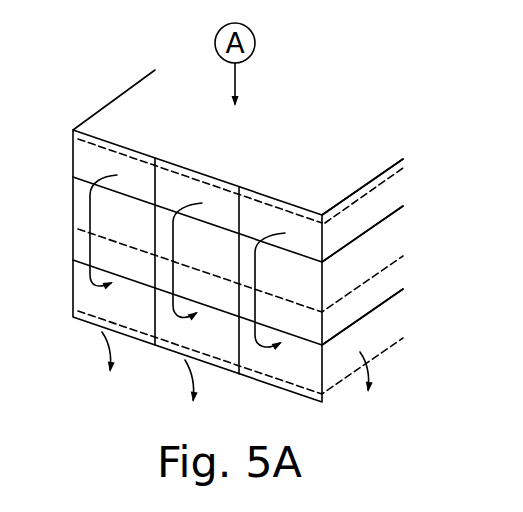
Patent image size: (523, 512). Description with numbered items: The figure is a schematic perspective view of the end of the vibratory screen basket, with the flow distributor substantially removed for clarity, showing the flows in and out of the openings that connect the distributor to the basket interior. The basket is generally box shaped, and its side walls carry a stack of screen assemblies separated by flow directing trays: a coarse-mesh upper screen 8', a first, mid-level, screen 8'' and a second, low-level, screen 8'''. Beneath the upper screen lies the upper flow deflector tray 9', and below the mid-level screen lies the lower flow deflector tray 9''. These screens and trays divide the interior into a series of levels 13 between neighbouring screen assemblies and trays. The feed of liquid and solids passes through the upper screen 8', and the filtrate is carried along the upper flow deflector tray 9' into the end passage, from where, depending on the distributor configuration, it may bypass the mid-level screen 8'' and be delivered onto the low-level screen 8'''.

The upper screen 8' is at (216, 178).
The first, mid-level, screen 8'' is at (216, 263).
The second, low-level, screen 8''' is at (216, 350).
The upper flow deflector tray 9' is at (216, 215).
The lower flow deflector tray 9'' is at (216, 302).
The levels 13 is at (383, 323).